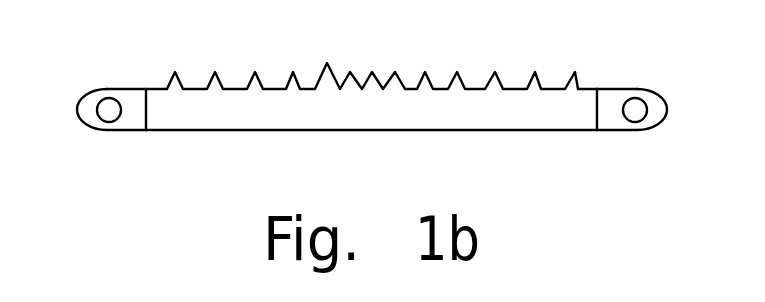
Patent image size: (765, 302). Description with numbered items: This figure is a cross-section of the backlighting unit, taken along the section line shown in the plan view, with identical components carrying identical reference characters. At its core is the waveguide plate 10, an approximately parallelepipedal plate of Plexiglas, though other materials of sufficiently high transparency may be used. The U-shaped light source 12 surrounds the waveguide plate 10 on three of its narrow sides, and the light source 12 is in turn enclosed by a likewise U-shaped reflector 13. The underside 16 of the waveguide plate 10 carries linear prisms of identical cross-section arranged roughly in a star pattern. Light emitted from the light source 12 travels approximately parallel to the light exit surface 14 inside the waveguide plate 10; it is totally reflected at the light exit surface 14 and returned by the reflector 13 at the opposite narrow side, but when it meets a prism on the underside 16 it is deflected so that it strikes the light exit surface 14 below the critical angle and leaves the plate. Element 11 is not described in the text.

The waveguide plate 10 is at (371, 103).
The end portion boundary 11 is at (146, 110).
The light source 12 is at (110, 112).
The reflector 13 is at (88, 126).
The light exit surface 14 is at (500, 118).
The underside 16 is at (482, 88).